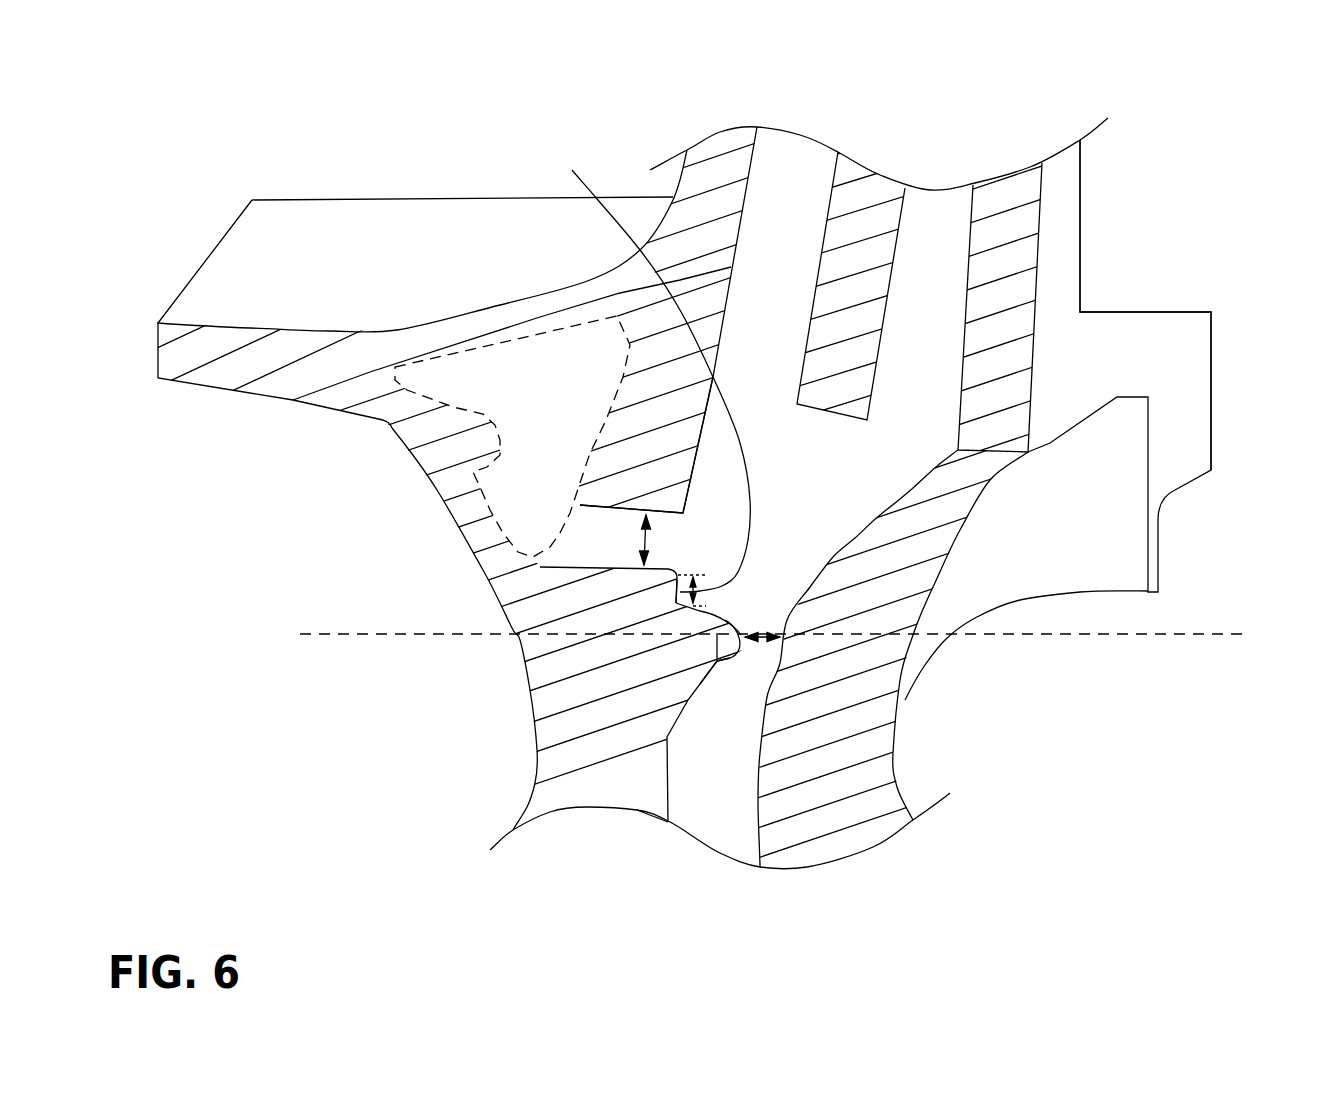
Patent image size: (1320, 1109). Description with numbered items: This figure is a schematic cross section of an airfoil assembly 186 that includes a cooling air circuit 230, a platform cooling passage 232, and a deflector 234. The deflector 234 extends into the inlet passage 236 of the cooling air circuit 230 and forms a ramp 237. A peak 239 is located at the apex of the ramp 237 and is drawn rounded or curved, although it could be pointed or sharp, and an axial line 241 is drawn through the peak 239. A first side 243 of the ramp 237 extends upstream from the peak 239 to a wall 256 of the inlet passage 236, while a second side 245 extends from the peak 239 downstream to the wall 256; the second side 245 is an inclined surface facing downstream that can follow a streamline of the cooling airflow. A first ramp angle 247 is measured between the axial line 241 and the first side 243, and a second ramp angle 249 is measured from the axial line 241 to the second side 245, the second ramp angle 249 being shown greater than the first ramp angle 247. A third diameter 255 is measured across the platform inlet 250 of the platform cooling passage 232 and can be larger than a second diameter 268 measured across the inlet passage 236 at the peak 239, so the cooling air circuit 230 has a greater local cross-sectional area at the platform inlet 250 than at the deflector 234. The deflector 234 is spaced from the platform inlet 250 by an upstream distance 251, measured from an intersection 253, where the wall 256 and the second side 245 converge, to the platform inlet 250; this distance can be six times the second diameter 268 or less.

The airfoil assembly 186 is at (1197, 154).
The platform cooling passage 232 is at (604, 498).
The platform inlet 250 is at (683, 513).
The upstream distance 251 is at (643, 369).
The ramp 237 is at (747, 601).
The third diameter 255 is at (645, 540).
The wall 256 is at (540, 568).
The intersection 253 is at (688, 590).
The first side 243 is at (673, 603).
The first ramp angle 247 is at (720, 641).
The second ramp angle 249 is at (705, 668).
The second side 245 is at (683, 698).
The cooling air circuit 230 is at (800, 656).
The deflector 234 is at (741, 674).
The inlet passage 236 is at (763, 760).
The peak 239 is at (880, 565).
The second diameter 268 is at (933, 587).
The axial line 241 is at (1133, 636).